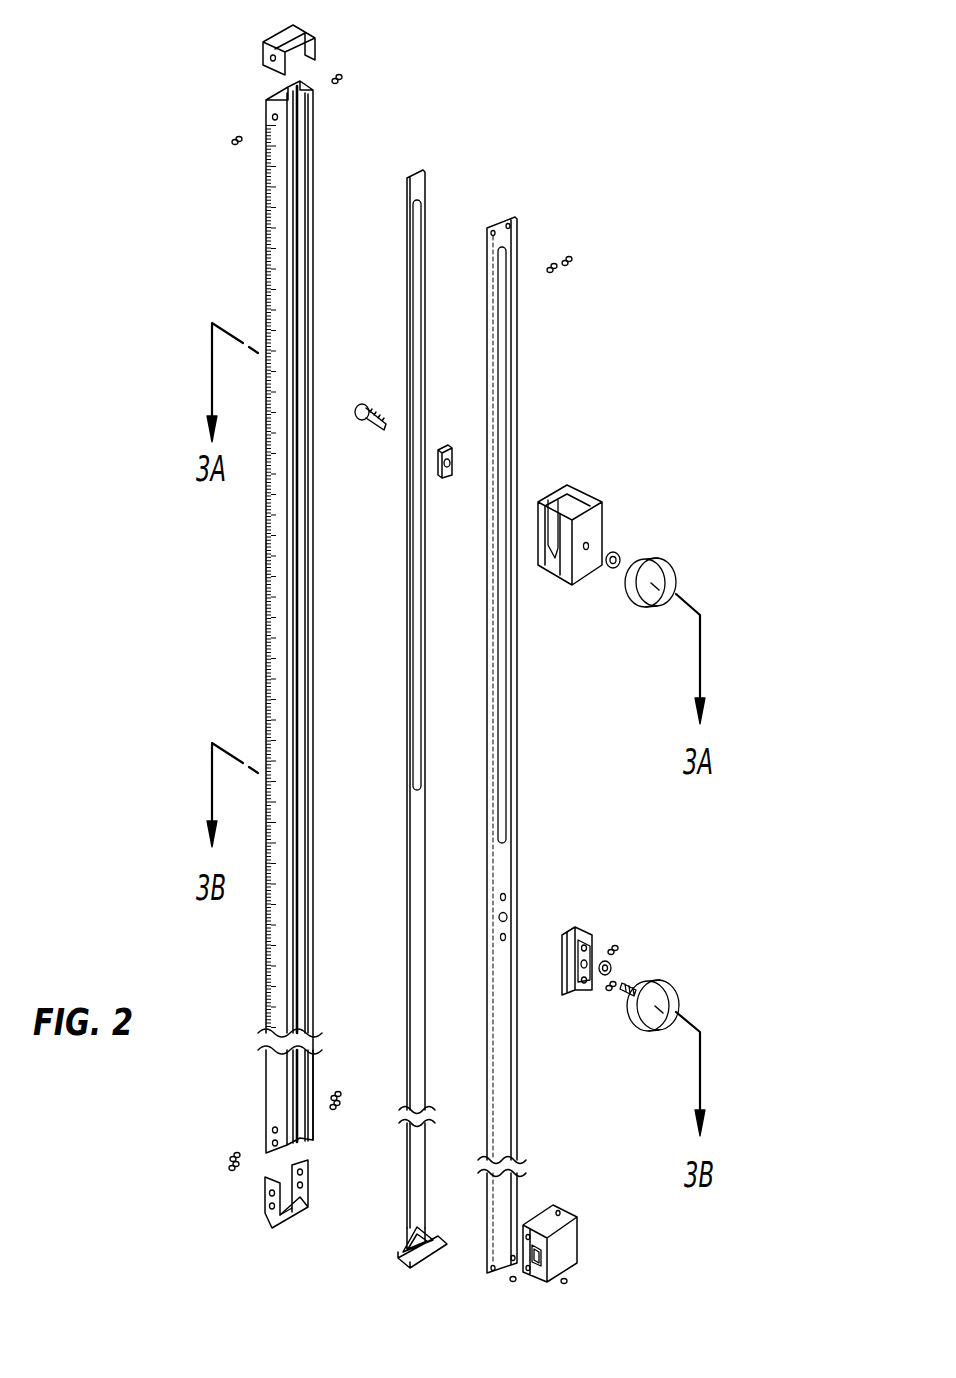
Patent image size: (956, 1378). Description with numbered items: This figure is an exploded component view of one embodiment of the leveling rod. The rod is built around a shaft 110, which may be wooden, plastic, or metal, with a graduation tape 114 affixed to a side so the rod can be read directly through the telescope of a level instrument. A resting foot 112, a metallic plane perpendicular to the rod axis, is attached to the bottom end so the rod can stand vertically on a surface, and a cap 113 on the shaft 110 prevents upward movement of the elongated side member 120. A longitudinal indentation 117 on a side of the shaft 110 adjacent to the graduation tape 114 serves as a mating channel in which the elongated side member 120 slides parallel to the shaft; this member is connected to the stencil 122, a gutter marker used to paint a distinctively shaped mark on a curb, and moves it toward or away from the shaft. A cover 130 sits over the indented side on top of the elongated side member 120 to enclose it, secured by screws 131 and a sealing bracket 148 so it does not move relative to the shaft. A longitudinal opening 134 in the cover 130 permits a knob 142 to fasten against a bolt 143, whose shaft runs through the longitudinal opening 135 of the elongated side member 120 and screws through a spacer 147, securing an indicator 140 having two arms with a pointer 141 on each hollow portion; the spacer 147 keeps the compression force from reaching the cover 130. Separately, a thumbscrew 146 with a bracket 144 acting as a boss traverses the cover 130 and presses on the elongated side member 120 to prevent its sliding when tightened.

The shaft 110 is at (277, 98).
The resting foot 112 is at (274, 1212).
The cap 113 is at (283, 40).
The graduation tape 114 is at (272, 558).
The longitudinal indentation 117 is at (298, 97).
The elongated side member 120 is at (426, 694).
The stencil 122 is at (400, 1257).
The cover 130 is at (547, 717).
The screws 131 is at (510, 1279).
The longitudinal opening 134 is at (510, 278).
The longitudinal opening 135 is at (414, 228).
The indicator 140 is at (607, 512).
The pointer 141 is at (562, 540).
The knob 142 is at (665, 578).
The bolt 143 is at (366, 408).
The bracket 144 is at (590, 924).
The thumbscrew 146 is at (668, 1000).
The spacer 147 is at (445, 445).
The sealing bracket 148 is at (570, 1236).